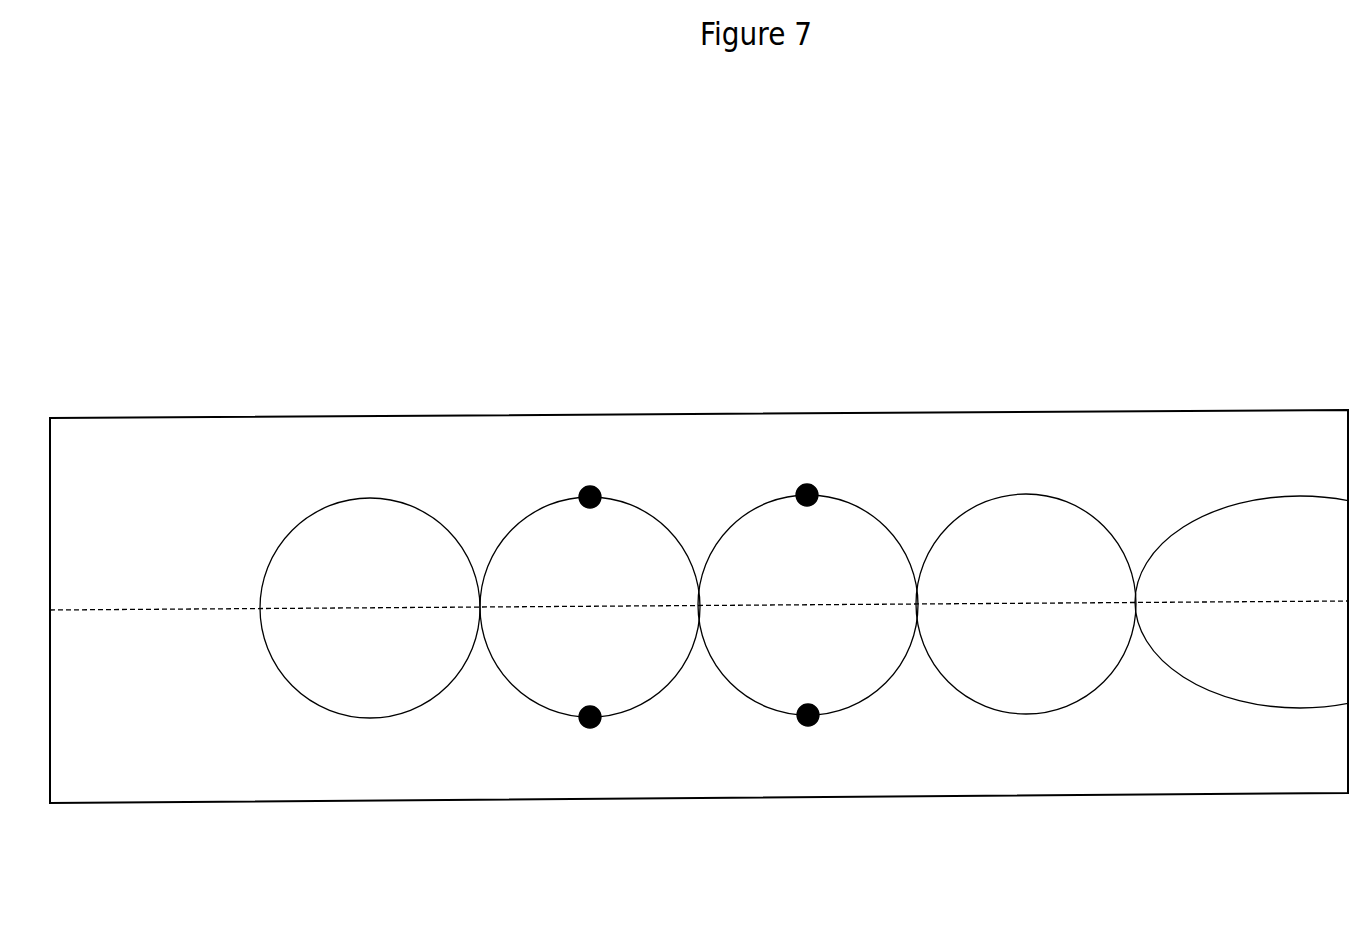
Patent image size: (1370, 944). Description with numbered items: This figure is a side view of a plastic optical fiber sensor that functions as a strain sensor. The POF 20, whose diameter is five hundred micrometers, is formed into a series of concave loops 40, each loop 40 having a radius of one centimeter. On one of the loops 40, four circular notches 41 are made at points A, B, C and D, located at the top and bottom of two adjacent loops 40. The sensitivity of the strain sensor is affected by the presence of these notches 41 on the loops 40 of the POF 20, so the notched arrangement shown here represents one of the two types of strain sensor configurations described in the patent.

The POF 20 is at (206, 417).
The loop 40 is at (435, 520).
The notch 41 is at (583, 490).